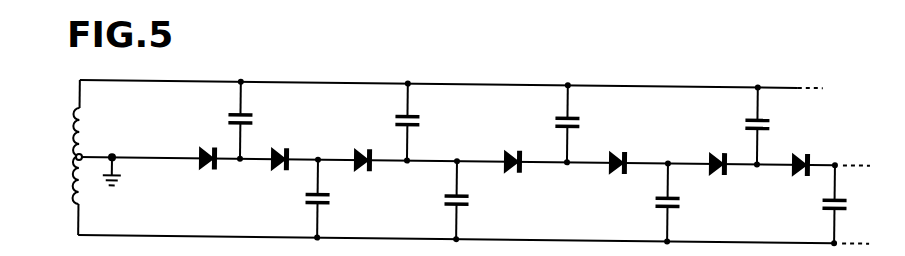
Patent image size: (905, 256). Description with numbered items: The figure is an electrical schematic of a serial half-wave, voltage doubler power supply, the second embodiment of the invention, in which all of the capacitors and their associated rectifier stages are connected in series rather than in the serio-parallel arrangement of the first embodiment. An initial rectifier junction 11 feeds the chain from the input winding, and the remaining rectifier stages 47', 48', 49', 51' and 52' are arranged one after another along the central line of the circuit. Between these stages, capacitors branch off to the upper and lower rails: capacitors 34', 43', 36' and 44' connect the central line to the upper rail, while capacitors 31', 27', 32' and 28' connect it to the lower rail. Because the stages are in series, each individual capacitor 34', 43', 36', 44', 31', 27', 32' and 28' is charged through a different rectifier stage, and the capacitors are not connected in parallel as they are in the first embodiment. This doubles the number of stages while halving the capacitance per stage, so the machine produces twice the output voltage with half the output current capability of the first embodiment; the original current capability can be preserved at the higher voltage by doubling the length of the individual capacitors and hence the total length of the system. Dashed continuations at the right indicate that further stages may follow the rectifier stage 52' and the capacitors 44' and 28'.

The rectifier junction 11 is at (204, 141).
The capacitor 34' is at (260, 121).
The capacitor 43' is at (378, 122).
The capacitor 36' is at (546, 124).
The capacitor 44' is at (780, 126).
The capacitor 31' is at (291, 198).
The capacitor 27' is at (484, 200).
The capacitor 32' is at (696, 202).
The capacitor 28' is at (811, 204).
The rectifier stage 47' is at (258, 173).
The rectifier stage 48' is at (369, 186).
The rectifier stage 49' is at (487, 142).
The rectifier stage 51' is at (605, 189).
The rectifier stage 52' is at (701, 147).